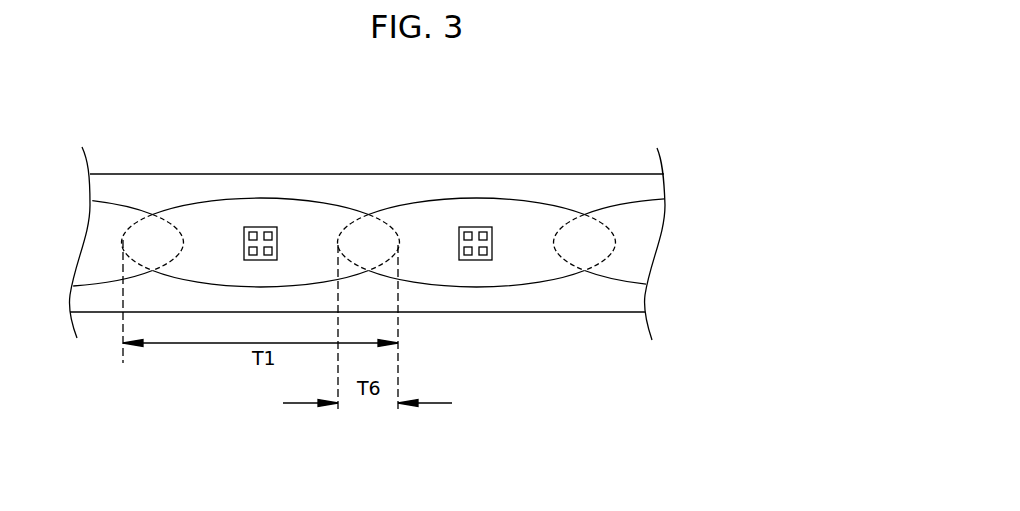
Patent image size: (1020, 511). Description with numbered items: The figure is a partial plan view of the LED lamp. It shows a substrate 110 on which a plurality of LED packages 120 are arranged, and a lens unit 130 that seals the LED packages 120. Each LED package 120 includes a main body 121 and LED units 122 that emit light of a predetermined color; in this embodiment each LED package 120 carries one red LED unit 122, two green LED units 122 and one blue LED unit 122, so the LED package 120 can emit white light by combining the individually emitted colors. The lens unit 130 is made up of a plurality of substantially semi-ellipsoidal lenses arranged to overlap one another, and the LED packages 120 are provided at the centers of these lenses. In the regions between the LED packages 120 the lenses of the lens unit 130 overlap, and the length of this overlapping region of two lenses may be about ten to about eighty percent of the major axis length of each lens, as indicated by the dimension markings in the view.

The substrate 110 is at (643, 187).
The LED package 120 is at (514, 169).
The main body 121 is at (494, 240).
The LED unit 122 is at (481, 229).
The lens unit 130 is at (422, 215).